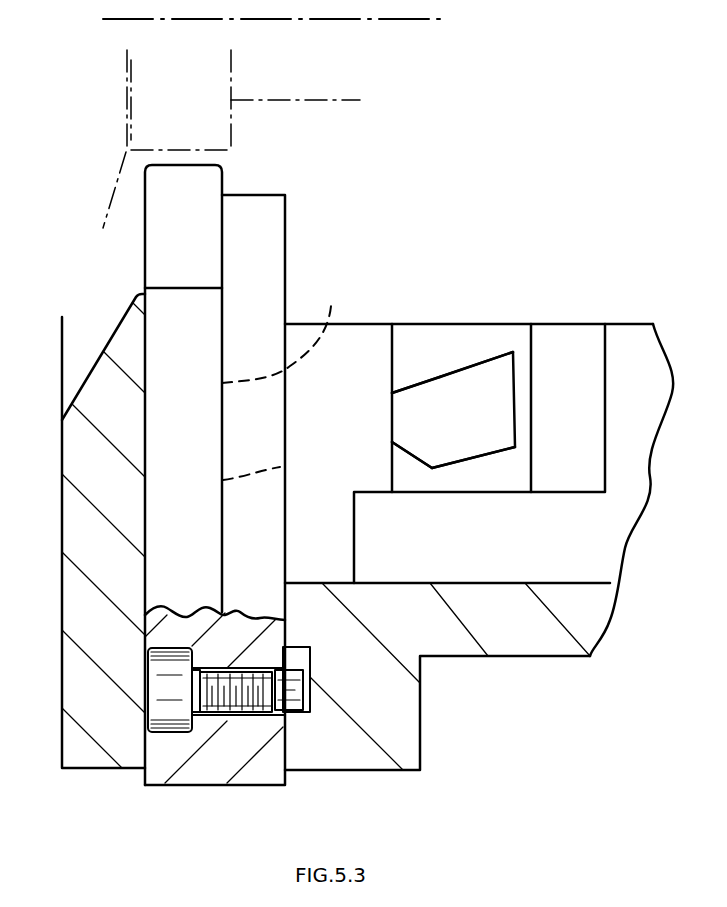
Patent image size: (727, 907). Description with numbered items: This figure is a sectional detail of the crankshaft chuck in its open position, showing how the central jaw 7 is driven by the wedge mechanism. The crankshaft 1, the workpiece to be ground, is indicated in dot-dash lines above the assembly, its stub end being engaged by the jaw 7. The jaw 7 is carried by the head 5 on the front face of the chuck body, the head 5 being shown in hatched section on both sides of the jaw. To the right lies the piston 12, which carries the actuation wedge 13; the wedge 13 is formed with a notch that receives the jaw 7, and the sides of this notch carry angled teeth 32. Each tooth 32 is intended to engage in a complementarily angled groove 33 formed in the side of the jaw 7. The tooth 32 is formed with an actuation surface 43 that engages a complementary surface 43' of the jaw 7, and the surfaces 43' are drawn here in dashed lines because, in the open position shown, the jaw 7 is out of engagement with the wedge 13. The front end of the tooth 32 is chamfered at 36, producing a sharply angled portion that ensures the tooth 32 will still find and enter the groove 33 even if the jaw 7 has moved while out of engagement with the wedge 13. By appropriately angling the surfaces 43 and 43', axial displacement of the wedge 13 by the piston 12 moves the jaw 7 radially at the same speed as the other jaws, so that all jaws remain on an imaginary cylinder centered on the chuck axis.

The crankshaft 1 is at (125, 108).
The head 5 is at (72, 587).
The jaw 7 is at (287, 534).
The piston 12 is at (630, 468).
The actuation wedge 13 is at (572, 388).
The angled teeth 32 is at (467, 423).
The angled groove 33 is at (262, 428).
The chamfer 36 is at (417, 377).
The actuation surfaces 43 is at (475, 404).
The complementary surfaces 43' is at (256, 374).